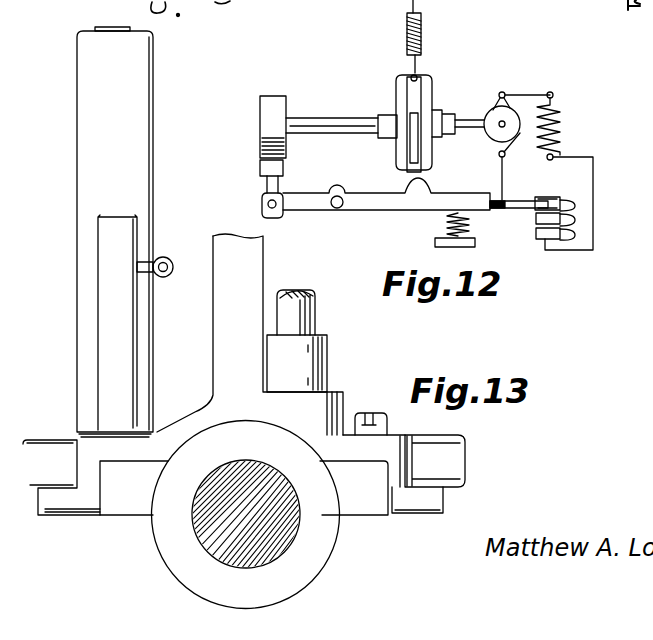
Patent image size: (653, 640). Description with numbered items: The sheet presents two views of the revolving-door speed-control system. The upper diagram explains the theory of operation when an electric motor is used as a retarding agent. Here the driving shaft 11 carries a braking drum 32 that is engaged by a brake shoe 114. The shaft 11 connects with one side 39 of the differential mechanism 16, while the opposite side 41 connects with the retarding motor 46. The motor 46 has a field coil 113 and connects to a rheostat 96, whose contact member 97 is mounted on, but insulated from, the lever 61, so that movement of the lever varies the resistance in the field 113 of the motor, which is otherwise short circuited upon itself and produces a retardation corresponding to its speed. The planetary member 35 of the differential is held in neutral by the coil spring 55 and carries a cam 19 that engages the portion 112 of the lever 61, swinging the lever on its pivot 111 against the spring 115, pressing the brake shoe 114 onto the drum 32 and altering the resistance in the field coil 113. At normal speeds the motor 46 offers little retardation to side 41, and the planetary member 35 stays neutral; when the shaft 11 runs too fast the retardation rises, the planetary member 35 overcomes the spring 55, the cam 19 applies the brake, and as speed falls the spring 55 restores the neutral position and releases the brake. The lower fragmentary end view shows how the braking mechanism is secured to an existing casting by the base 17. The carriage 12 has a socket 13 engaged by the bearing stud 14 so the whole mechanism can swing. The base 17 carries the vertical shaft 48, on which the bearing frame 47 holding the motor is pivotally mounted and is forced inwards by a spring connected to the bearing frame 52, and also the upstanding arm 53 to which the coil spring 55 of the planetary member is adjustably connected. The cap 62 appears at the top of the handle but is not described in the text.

In FIG. 12, the shaft 11 is at (328, 126).
In FIG. 13, the carriage 12 is at (432, 499).
In FIG. 13, the socket 13 is at (318, 552).
In FIG. 13, the bearing stud 14 is at (193, 536).
In FIG. 12, the differential mechanism 16 is at (457, 63).
In FIG. 13, the base 17 is at (450, 461).
In FIG. 12, the cam 19 is at (410, 115).
In FIG. 12, the braking drum 32 is at (292, 88).
In FIG. 12, the planetary member 35 is at (413, 83).
In FIG. 12, the side of differential mechanism 39 is at (407, 155).
In FIG. 12, the side of differential mechanism 41 is at (433, 150).
In FIG. 12, the motor 46 is at (493, 112).
In FIG. 13, the bearing frame 47 is at (305, 366).
In FIG. 13, the vertical shaft 48 is at (310, 316).
In FIG. 13, the bearing frame 52 is at (112, 370).
In FIG. 13, the upstanding arm 53 is at (216, 344).
In FIG. 12, the coil spring 55 is at (421, 35).
In FIG. 12, the lever 61 is at (378, 188).
In FIG. 13, the cap 62 is at (107, 27).
In FIG. 12, the rheostat 96 is at (537, 229).
In FIG. 12, the contact member 97 is at (527, 187).
In FIG. 12, the pivot 111 is at (335, 213).
In FIG. 12, the portion of lever 112 is at (428, 186).
In FIG. 12, the field coil 113 is at (555, 125).
In FIG. 12, the brake shoe 114 is at (282, 170).
In FIG. 12, the spring 115 is at (443, 228).